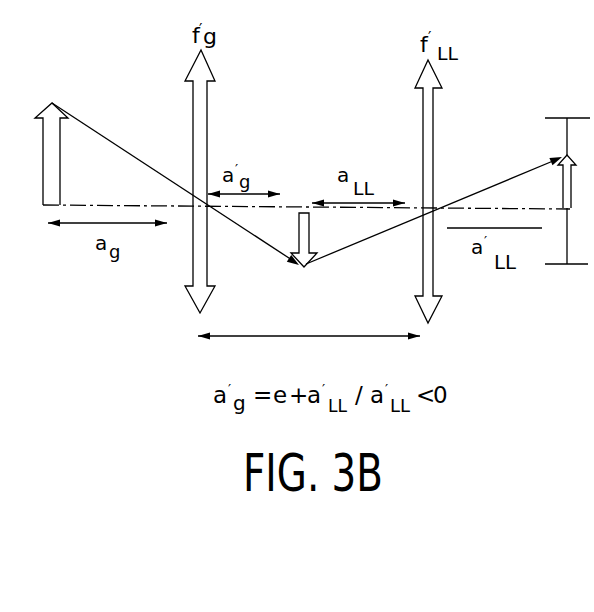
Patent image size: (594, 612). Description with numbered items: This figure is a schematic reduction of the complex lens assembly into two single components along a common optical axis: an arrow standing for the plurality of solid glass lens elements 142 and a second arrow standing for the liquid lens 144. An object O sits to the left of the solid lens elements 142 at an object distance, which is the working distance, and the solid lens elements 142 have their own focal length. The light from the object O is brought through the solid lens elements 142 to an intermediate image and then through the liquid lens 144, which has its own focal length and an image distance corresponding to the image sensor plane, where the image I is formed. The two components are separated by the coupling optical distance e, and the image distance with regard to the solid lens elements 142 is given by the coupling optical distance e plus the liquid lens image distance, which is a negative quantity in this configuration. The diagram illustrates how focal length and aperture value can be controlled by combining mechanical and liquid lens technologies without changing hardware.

The solid lens elements 142 is at (207, 121).
The liquid lens 144 is at (434, 137).
The object O is at (44, 140).
The image I is at (567, 191).
The coupling optical distance e is at (309, 350).